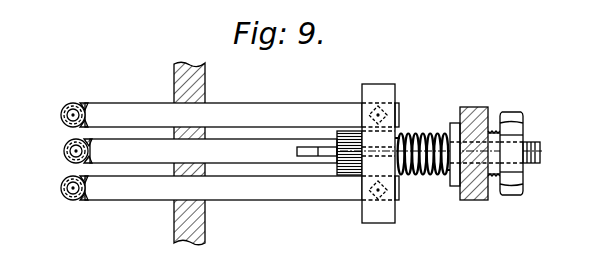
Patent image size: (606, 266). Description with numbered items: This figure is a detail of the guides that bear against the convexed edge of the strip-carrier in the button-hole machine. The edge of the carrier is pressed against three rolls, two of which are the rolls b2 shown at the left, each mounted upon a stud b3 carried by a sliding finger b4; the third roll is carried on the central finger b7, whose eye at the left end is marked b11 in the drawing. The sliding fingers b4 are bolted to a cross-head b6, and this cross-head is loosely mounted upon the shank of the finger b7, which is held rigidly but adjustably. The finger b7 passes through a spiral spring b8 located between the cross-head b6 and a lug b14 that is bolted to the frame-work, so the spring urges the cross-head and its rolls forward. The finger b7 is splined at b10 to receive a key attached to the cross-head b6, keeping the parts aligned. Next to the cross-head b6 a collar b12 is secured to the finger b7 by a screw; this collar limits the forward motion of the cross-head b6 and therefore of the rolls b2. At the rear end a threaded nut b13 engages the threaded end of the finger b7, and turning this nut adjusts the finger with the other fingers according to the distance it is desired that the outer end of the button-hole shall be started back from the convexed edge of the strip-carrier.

The rolls b2 is at (61, 118).
The studs b3 is at (74, 112).
The sliding fingers b4 is at (223, 158).
The cross-head b6 is at (374, 90).
The finger b7 is at (292, 153).
The spring b8 is at (418, 139).
The spline b10 is at (319, 146).
The eye of middle rod b11 is at (64, 152).
The collar b12 is at (345, 177).
The threaded nut b13 is at (508, 112).
The lug b14 is at (470, 107).